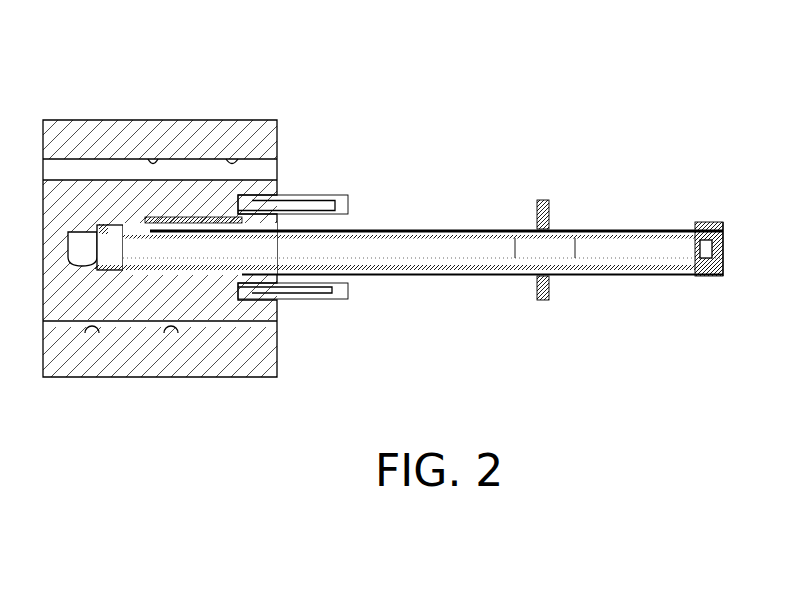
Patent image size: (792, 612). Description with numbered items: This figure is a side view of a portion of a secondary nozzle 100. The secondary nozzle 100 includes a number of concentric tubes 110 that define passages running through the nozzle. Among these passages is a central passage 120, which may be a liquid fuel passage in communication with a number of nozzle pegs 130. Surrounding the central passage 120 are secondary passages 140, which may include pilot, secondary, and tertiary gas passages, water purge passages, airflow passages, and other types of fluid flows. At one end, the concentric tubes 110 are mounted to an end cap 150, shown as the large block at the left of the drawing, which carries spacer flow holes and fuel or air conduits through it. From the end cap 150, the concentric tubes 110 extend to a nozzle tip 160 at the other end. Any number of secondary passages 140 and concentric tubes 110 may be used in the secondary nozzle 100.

The secondary nozzle 100 is at (183, 62).
The concentric tubes 110 is at (647, 213).
The central passage 120 is at (398, 253).
The nozzle pegs 130 is at (548, 202).
The secondary passages 140 is at (497, 258).
The end cap 150 is at (226, 377).
The nozzle tip 160 is at (725, 228).